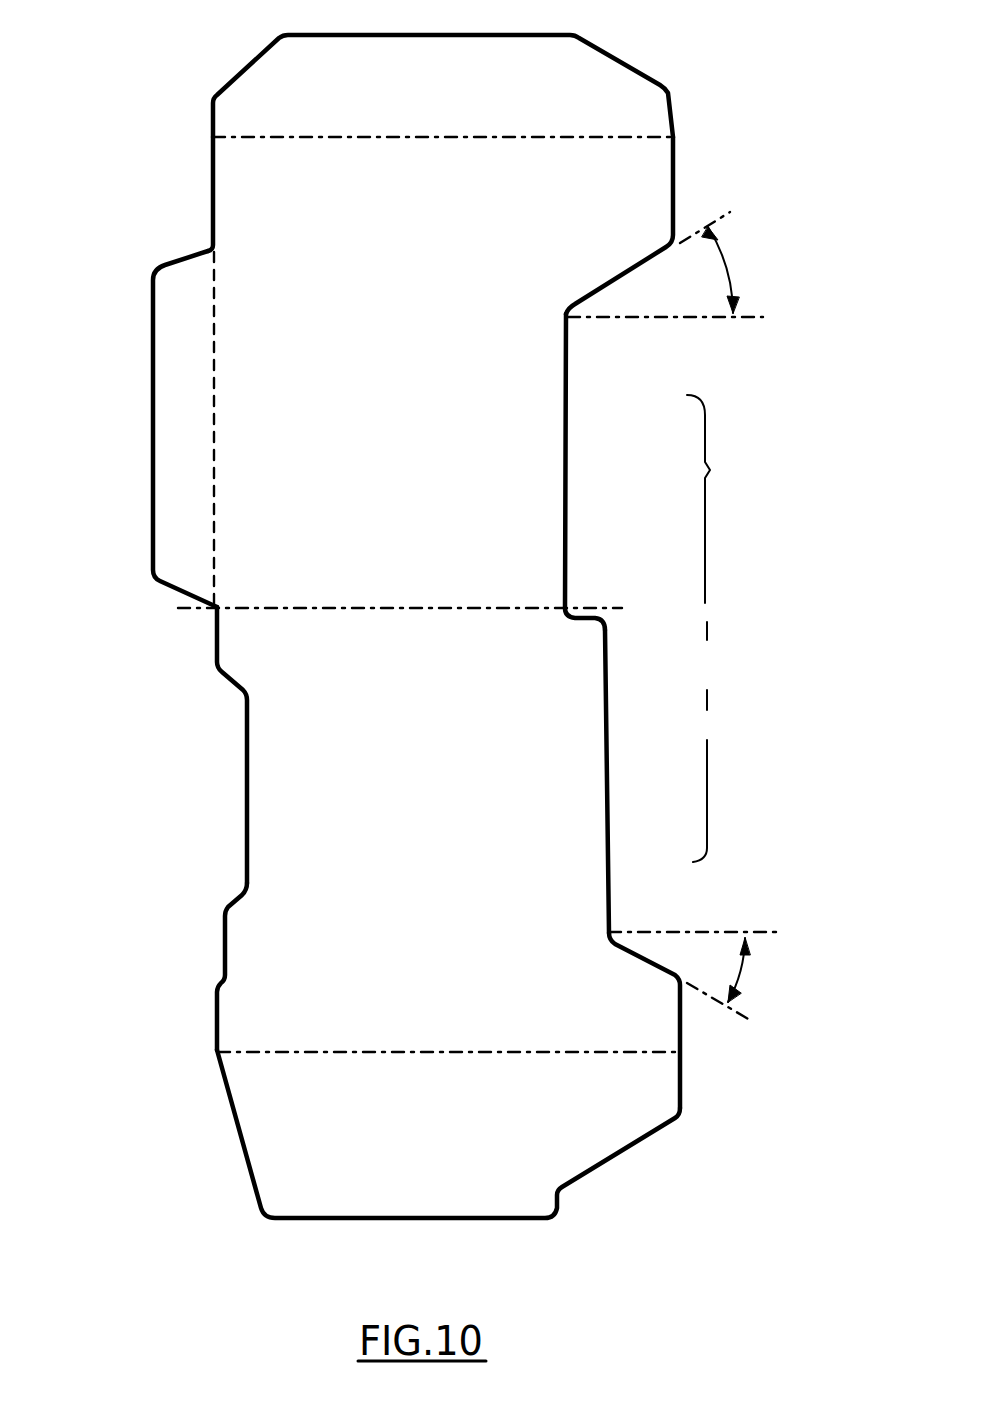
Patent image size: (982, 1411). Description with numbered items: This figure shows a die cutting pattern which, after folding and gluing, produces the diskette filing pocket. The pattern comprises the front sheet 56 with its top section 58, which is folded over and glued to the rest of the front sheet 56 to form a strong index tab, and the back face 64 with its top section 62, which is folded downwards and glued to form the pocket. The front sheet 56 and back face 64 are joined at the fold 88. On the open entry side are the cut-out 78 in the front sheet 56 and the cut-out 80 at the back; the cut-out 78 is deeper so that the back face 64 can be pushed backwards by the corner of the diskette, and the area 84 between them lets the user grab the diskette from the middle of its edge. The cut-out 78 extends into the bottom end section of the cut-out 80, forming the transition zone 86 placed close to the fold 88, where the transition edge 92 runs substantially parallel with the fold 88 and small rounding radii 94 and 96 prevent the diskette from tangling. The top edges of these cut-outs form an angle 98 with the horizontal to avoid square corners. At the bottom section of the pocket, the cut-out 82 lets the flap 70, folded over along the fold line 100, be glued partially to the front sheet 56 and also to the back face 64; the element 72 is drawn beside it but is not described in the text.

The front sheet 56 is at (270, 178).
The top section 58 is at (625, 103).
The top section of back face 62 is at (593, 1120).
The back face 64 is at (545, 952).
The flap 70 is at (182, 368).
The side wing 72 is at (243, 875).
The cut-out 78 is at (605, 355).
The cut-out 80 is at (650, 892).
The cut-out 82 is at (233, 803).
The area 84 is at (710, 470).
The transition zone 86 is at (597, 615).
The fold 88 is at (190, 610).
The transition edge 92 is at (592, 626).
The rounding radius 94 is at (597, 620).
The rounding radius 96 is at (567, 614).
The angle 98 is at (733, 273).
The fold line 100 is at (213, 317).